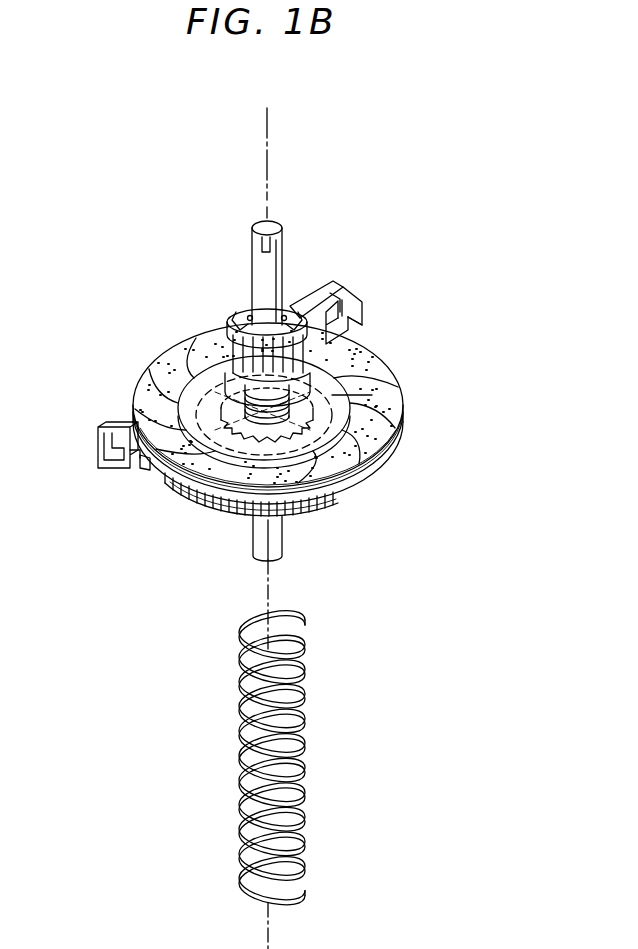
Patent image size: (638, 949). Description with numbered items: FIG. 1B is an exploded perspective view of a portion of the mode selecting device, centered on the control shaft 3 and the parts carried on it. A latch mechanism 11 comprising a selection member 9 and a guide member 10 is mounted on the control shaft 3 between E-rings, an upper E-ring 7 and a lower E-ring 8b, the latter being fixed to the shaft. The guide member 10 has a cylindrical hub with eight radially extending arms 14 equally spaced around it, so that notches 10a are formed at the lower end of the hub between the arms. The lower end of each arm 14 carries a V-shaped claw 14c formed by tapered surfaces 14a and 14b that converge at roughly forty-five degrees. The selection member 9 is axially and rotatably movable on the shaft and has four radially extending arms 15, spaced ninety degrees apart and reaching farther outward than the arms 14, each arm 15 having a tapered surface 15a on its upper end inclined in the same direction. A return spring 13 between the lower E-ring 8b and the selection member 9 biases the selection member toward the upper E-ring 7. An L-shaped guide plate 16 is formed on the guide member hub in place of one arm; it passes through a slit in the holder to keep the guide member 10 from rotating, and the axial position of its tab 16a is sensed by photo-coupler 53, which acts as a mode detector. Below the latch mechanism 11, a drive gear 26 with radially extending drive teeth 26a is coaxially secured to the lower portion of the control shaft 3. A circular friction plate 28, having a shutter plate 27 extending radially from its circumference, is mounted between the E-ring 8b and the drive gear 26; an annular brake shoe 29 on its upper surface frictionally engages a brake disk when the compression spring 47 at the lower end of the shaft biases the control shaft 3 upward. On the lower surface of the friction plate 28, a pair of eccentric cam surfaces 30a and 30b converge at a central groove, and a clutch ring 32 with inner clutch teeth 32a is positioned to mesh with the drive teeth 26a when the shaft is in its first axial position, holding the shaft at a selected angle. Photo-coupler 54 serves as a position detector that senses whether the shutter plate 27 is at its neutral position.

The control shaft 3 is at (270, 262).
The E-ring 7 is at (226, 321).
The E-ring 8b is at (264, 410).
The selection member 9 is at (200, 395).
The guide member 10 is at (232, 376).
The notches 10a is at (284, 360).
The latch mechanism 11 is at (428, 395).
The return spring 13 is at (272, 418).
The radially extending arms 14 is at (229, 336).
The tapered surface 14a is at (386, 412).
The tapered surface 14b is at (372, 372).
The V-shaped claw 14c is at (378, 470).
The radially extending arms 15 is at (312, 400).
The tapered surface 15a is at (378, 447).
The L-shaped guide plate 16 is at (325, 292).
The tab 16a is at (350, 325).
The drive gear 26 is at (310, 492).
The drive teeth 26a is at (290, 520).
The shutter plate 27 is at (142, 470).
The friction plate 28 is at (380, 468).
The brake shoe 29 is at (352, 348).
The cam surface 30a is at (306, 507).
The cam surface 30b is at (120, 410).
The clutch ring 32 is at (172, 477).
The clutch teeth 32a is at (345, 467).
The compression spring 47 is at (242, 737).
The photo-coupler 53 is at (352, 300).
The photo-coupler 54 is at (98, 438).